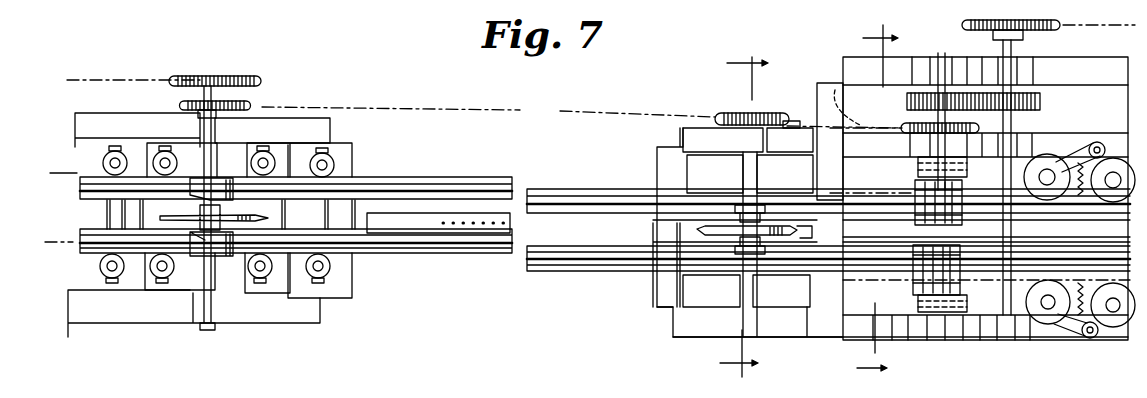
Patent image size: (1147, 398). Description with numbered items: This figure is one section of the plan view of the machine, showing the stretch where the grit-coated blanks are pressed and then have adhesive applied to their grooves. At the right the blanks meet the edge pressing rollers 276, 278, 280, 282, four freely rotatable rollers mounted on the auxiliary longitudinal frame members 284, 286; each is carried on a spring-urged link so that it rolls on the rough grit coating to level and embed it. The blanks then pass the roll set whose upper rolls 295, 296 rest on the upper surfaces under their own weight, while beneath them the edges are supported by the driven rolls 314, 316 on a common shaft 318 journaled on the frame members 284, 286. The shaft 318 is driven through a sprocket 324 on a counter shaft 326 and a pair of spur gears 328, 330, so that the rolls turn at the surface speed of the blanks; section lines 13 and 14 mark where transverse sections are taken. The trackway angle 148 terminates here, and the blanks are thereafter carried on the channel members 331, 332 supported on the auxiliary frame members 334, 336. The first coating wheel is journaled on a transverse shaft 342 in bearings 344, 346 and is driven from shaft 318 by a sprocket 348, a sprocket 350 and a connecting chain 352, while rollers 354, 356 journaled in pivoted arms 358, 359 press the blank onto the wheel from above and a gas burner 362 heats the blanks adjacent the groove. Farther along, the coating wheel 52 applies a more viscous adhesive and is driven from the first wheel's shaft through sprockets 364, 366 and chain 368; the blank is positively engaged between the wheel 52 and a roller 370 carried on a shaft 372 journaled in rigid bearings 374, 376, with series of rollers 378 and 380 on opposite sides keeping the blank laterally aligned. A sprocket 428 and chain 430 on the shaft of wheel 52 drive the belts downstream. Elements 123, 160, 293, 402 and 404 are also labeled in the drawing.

The section line 13- 13 is at (864, 203).
The section line 14- 14 is at (744, 216).
The coating wheel 52 is at (272, 218).
The shaft 123 is at (841, 213).
The trackway angle 148 is at (1006, 218).
The shaft 160 is at (1039, 261).
The edge pressing roller 276 is at (1110, 157).
The edge pressing roller 278 is at (1047, 154).
The edge pressing roller 280 is at (1040, 325).
The edge pressing roller 282 is at (1105, 340).
The auxiliary longitudinal frame member 284 is at (1063, 340).
The auxiliary longitudinal frame member 286 is at (1067, 128).
The ratchet 293 is at (1087, 240).
The upper roll 295 is at (958, 290).
The upper roll 296 is at (918, 166).
The driven roll 314 is at (915, 288).
The driven roll 316 is at (918, 195).
The common shaft 318 is at (940, 55).
The sprocket 324 is at (1045, 30).
The counter shaft 326 is at (952, 181).
The spur gear 328 is at (1040, 95).
The spur gear 330 is at (907, 100).
The channel member 331 is at (80, 191).
The channel member 332 is at (80, 237).
The auxiliary frame member 334 is at (496, 178).
The auxiliary frame member 336 is at (581, 271).
The transverse shaft 342 is at (760, 162).
The bearing 344 is at (745, 140).
The bearing 346 is at (737, 313).
The sprocket 348 is at (905, 129).
The sprocket 350 is at (785, 116).
The chain 352 is at (838, 97).
The roller 354 is at (738, 205).
The roller 356 is at (740, 255).
The arm 358 is at (775, 205).
The arm 359 is at (762, 255).
The burner 362 is at (417, 233).
The sprocket 364 is at (730, 113).
The sprocket 366 is at (262, 104).
The chain 368 is at (483, 113).
The roller 370 is at (200, 256).
The shaft 372 is at (200, 172).
The bearing 374 is at (225, 131).
The bearing 376 is at (215, 312).
The rollers 378 is at (103, 163).
The rollers 380 is at (100, 266).
The upper frame 402 is at (127, 123).
The lower frame 404 is at (194, 313).
The sprocket 428 is at (215, 76).
The chain 430 is at (97, 78).